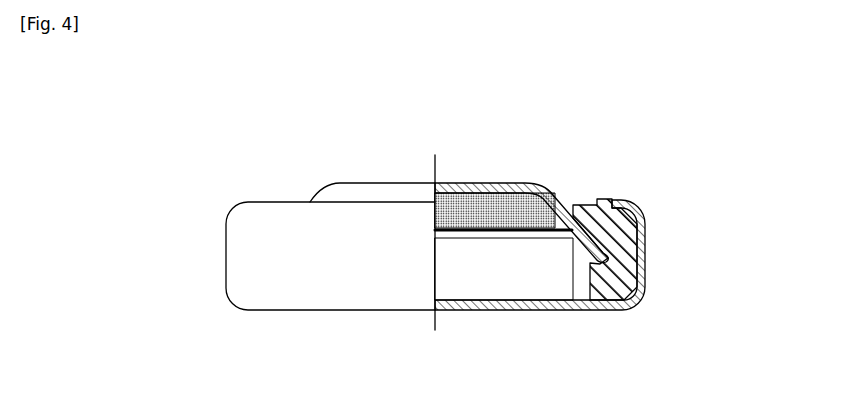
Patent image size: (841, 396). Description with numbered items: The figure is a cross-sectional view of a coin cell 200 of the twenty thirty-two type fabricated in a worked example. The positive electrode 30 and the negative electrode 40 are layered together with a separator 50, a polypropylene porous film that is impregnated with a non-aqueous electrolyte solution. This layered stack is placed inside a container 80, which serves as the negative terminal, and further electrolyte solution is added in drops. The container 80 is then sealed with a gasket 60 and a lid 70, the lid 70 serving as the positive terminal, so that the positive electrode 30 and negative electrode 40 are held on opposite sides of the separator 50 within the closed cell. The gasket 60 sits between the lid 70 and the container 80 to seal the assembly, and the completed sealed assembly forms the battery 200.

The coin cell 200 is at (644, 121).
The positive electrode 30 is at (492, 183).
The negative electrode 40 is at (510, 293).
The separator 50 is at (517, 233).
The gasket 60 is at (625, 238).
The lid 70 is at (378, 183).
The container 80 is at (328, 297).